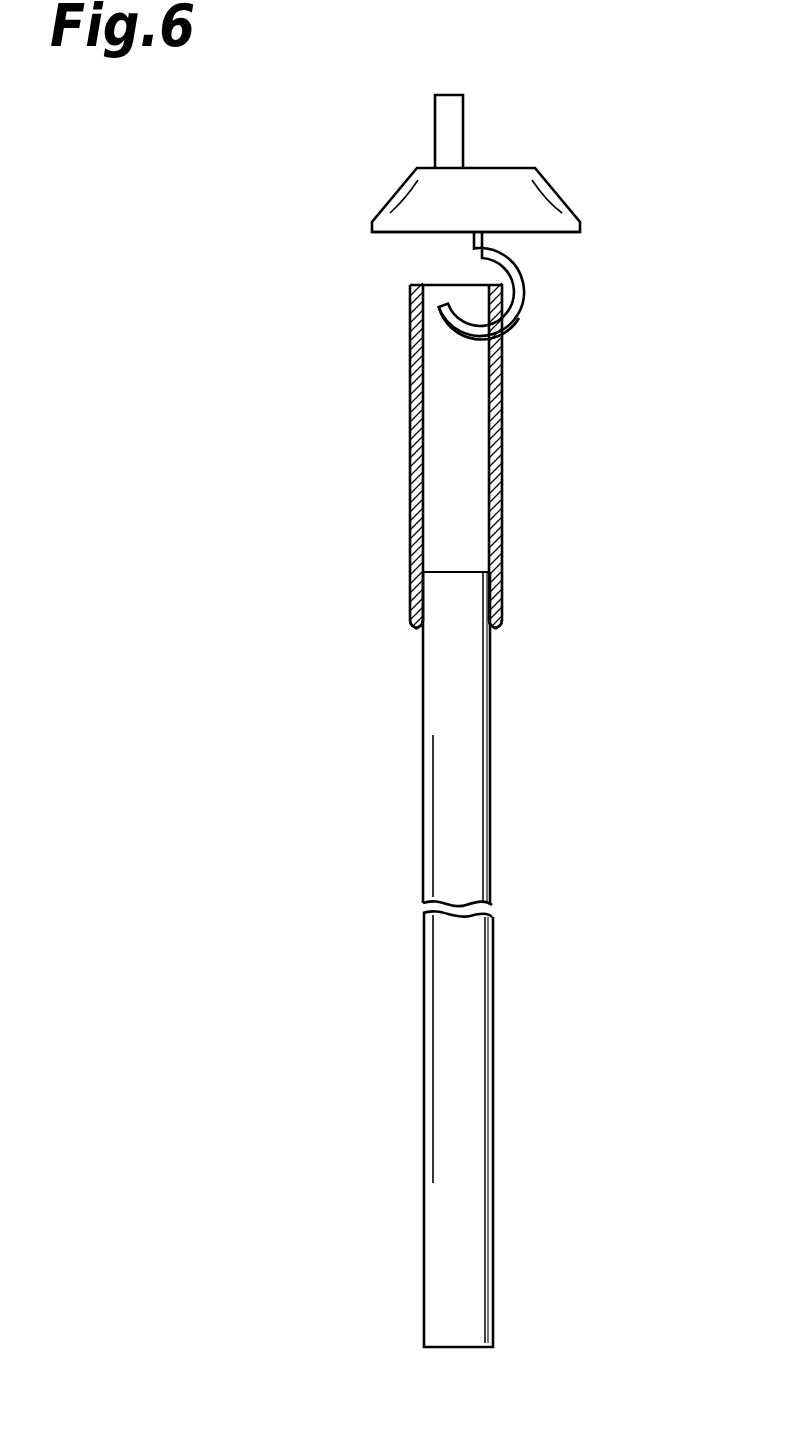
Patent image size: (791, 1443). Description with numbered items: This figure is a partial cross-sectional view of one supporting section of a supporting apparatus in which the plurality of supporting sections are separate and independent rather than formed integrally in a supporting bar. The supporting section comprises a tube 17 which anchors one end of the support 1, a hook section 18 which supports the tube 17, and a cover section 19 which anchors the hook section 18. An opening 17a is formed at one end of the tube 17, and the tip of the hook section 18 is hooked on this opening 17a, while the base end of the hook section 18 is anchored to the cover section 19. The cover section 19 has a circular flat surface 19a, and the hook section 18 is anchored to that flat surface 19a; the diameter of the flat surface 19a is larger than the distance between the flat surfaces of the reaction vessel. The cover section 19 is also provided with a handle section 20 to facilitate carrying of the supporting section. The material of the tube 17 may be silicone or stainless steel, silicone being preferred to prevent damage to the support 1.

The support 1 is at (472, 748).
The tube 17 is at (492, 453).
The opening 17a is at (510, 338).
The hook section 18 is at (518, 278).
The cover section 19 is at (519, 198).
The circular flat surface 19a is at (403, 234).
The handle section 20 is at (455, 122).